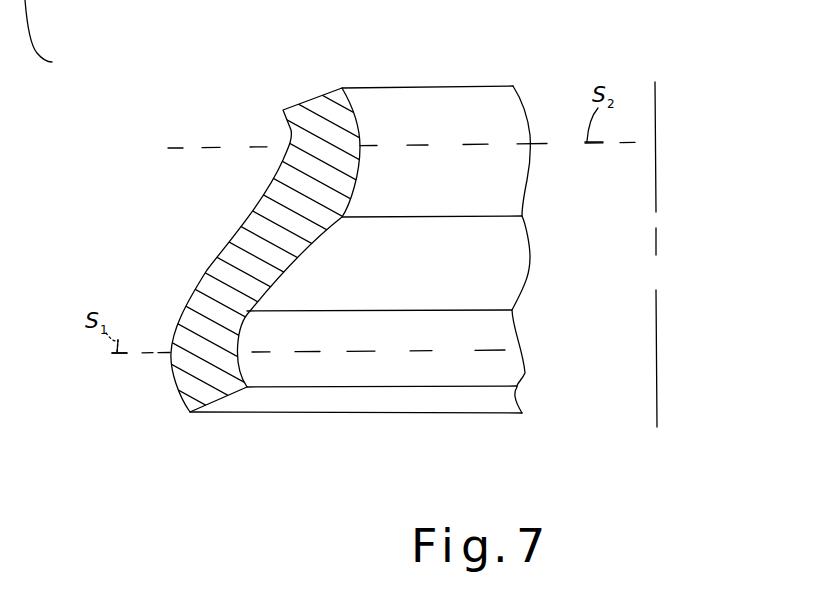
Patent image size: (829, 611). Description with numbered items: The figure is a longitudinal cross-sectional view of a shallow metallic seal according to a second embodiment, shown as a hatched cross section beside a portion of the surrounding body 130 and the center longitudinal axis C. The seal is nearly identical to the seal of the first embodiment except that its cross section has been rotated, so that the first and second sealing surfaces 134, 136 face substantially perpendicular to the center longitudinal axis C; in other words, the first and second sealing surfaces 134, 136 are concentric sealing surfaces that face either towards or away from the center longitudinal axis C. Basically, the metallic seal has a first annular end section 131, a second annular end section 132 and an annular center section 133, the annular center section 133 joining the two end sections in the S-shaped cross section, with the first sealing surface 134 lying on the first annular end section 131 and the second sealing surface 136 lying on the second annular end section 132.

The shaft body 130 is at (360, 249).
The first annular end section 131 is at (195, 368).
The second annular end section 132 is at (317, 127).
The annular center section 133 is at (250, 240).
The first sealing surface 134 is at (172, 350).
The second sealing surface 136 is at (357, 147).
The center longitudinal axis C is at (657, 118).